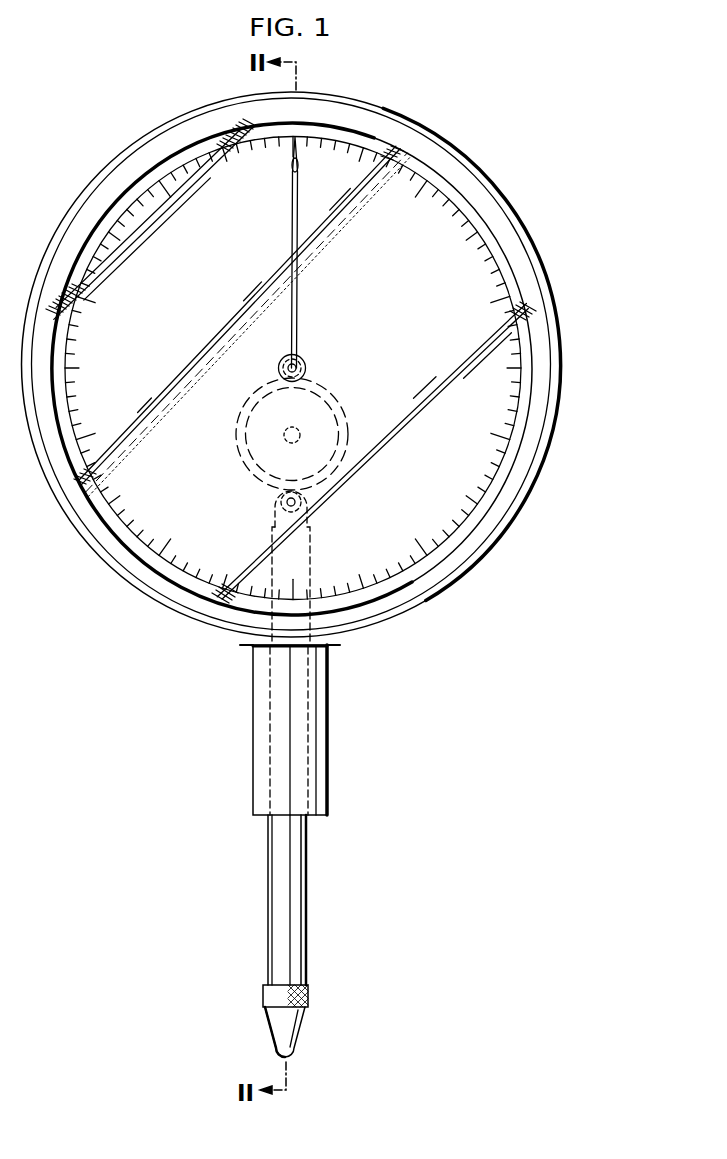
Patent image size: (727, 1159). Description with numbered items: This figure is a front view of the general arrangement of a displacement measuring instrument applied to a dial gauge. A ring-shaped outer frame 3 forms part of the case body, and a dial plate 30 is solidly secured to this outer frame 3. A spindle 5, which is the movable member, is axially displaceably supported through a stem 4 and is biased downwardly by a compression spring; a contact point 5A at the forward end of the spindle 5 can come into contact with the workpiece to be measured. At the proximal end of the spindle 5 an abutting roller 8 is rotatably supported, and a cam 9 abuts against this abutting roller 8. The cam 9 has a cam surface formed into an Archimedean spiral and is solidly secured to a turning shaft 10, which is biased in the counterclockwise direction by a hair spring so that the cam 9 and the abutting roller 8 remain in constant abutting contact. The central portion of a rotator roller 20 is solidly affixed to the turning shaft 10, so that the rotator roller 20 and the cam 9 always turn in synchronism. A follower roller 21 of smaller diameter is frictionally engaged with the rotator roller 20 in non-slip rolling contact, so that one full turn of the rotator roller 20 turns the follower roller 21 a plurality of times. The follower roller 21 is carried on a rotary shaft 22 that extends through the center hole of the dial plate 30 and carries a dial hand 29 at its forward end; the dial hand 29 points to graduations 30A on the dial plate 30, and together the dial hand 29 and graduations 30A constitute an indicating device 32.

The outer frame 3 is at (427, 143).
The stem 4 is at (262, 688).
The spindle 5 is at (275, 868).
The contact point 5A is at (280, 1022).
The abutting roller 8 is at (310, 503).
The cam 9 is at (337, 426).
The turning shaft 10 is at (295, 430).
The rotator roller 20 is at (364, 470).
The follower roller 21 is at (279, 370).
The rotary shaft 22 is at (305, 360).
The dial hand 29 is at (295, 275).
The dial plate 30 is at (435, 258).
The graduations 30A is at (163, 198).
The indicating device 32 is at (574, 168).